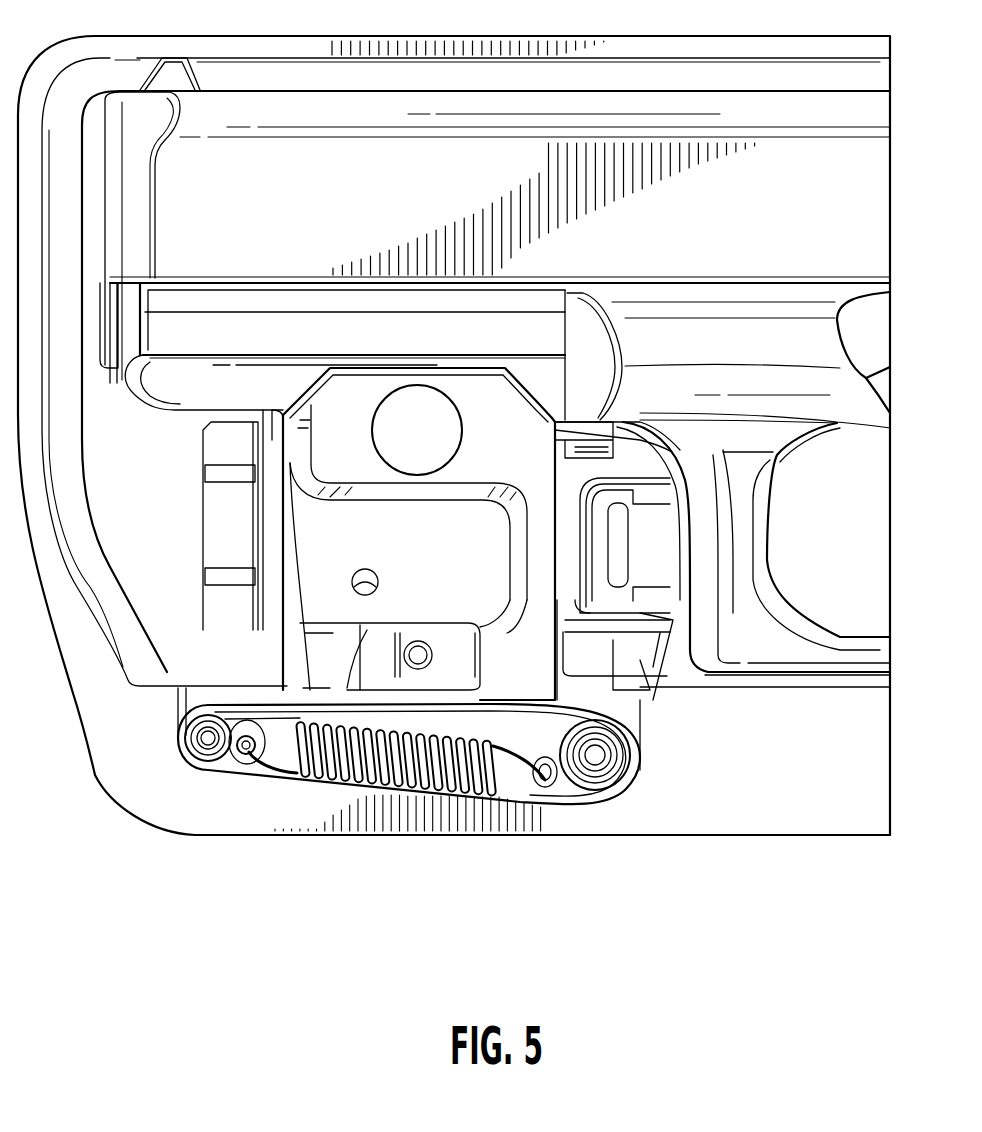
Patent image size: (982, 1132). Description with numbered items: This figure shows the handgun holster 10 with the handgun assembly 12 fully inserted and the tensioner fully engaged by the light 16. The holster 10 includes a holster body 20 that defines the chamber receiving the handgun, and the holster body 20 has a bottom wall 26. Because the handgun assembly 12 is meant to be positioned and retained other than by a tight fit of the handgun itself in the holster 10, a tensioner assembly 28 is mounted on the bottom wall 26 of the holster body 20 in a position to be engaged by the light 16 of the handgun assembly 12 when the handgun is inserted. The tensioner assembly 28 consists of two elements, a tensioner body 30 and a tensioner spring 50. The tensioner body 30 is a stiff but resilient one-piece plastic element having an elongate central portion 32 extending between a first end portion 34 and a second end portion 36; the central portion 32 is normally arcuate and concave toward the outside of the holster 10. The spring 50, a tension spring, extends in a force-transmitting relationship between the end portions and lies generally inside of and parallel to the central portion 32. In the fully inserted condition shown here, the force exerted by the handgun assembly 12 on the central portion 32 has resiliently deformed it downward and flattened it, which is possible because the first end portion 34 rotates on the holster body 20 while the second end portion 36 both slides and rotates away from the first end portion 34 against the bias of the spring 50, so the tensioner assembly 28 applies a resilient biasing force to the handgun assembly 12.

The handgun holster 10 is at (223, 903).
The handgun assembly 12 is at (742, 690).
The light 16 is at (313, 668).
The holster body 20 is at (80, 687).
The bottom wall 26 is at (782, 812).
The tensioner assembly 28 is at (148, 772).
The tensioner body 30 is at (523, 720).
The central portion 32 is at (460, 712).
The first end portion 34 is at (607, 800).
The second end portion 36 is at (200, 772).
The tensioner spring 50 is at (340, 786).